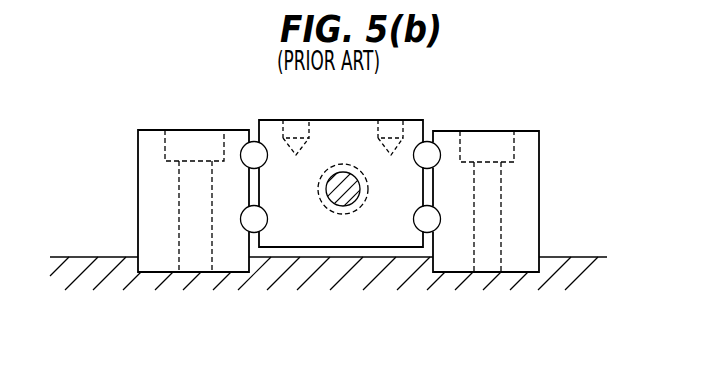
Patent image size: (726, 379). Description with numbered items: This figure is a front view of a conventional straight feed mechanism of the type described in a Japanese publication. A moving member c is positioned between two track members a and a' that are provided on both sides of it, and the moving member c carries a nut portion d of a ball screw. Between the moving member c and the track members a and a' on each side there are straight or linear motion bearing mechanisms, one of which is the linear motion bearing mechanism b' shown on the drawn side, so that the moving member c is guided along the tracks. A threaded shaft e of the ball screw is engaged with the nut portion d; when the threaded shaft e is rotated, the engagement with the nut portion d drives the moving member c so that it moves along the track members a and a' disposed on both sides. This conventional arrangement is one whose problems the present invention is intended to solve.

The track member a is at (193, 185).
The track member a' is at (511, 195).
The linear motion bearing mechanism b' is at (340, 233).
The moving member c is at (345, 133).
The nut portion d is at (349, 164).
The threaded shaft e is at (340, 203).